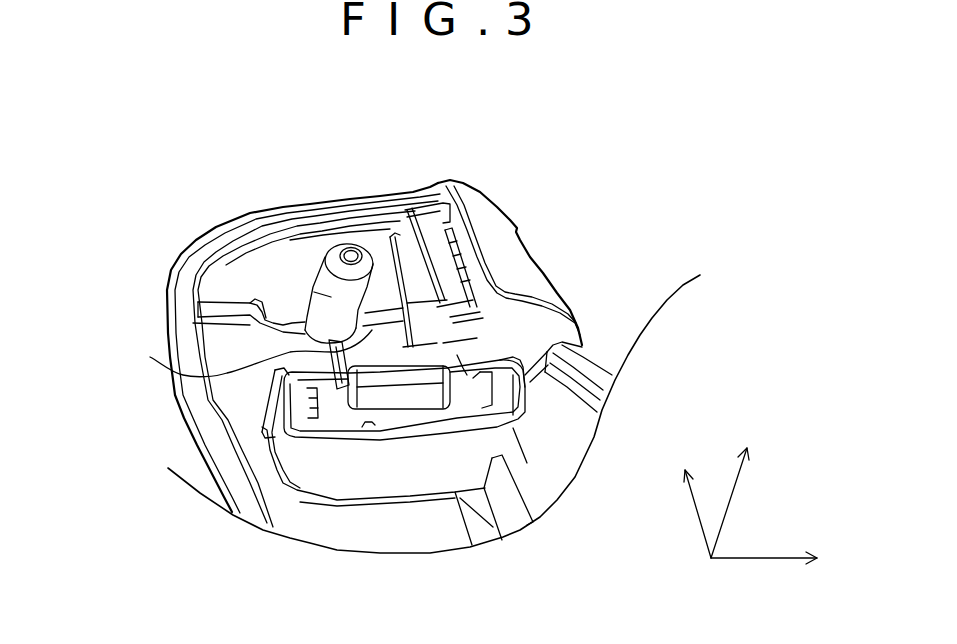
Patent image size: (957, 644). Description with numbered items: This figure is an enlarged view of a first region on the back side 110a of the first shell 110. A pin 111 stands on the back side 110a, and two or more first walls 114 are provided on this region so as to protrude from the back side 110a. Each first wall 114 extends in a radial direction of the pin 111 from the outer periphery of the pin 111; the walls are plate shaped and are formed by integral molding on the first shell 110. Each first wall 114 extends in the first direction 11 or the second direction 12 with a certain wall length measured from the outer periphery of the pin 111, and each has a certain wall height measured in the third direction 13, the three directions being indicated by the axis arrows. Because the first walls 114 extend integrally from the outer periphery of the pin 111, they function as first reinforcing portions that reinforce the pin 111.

The first shell 110 is at (376, 198).
The back side 110a is at (232, 412).
The pin 111 is at (308, 303).
The first walls 114 is at (250, 325).
The first direction 11 is at (773, 572).
The second direction 12 is at (681, 504).
The third direction 13 is at (746, 495).